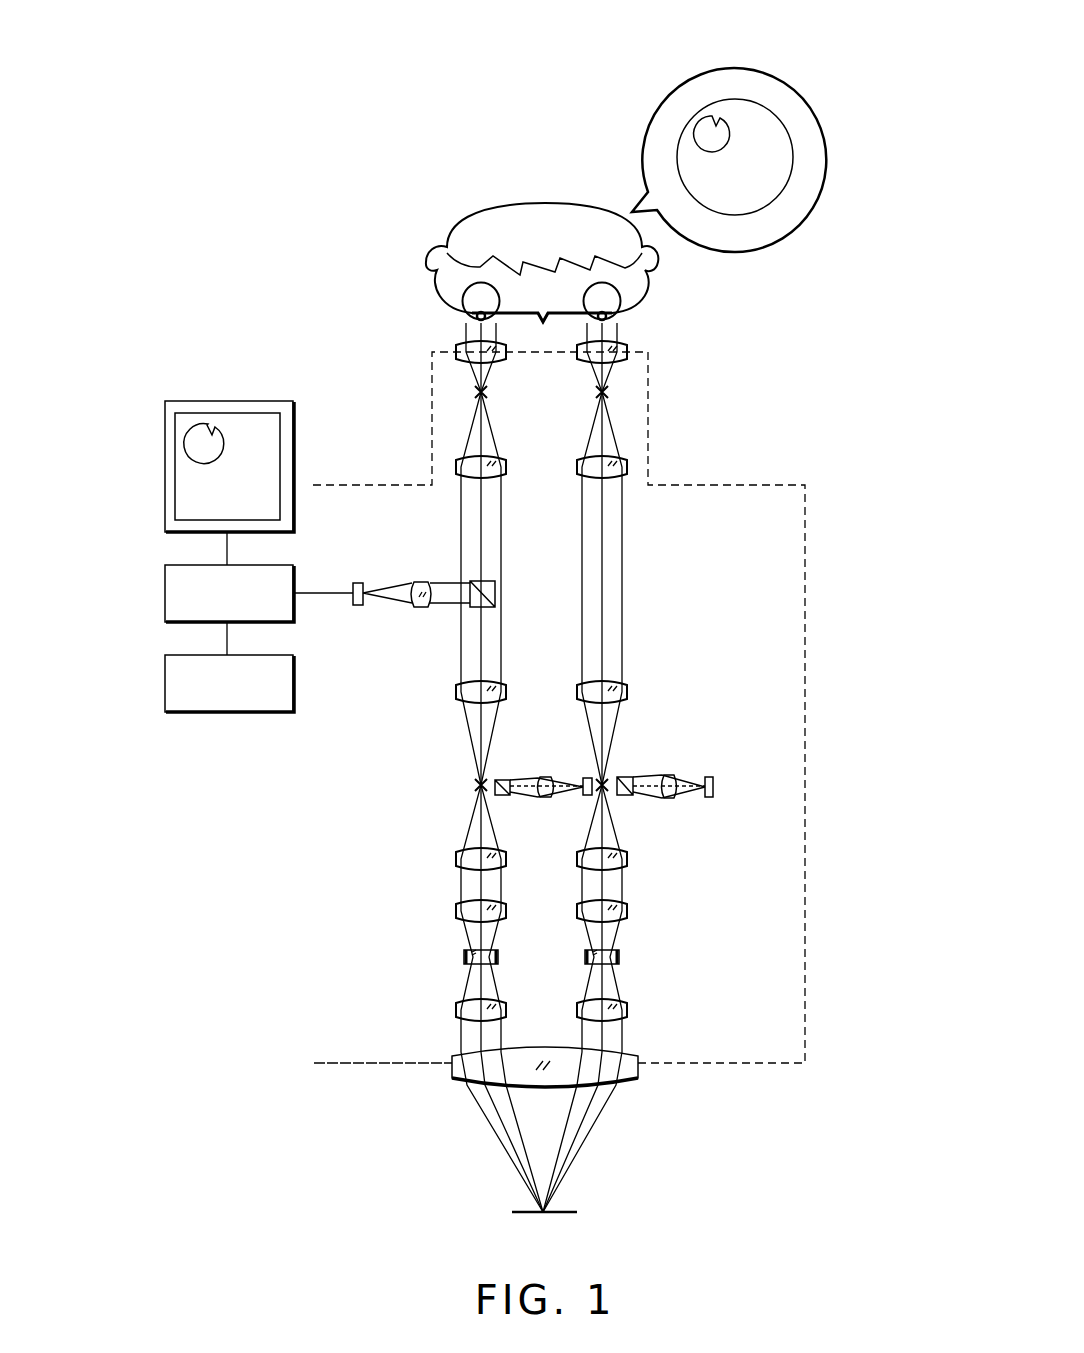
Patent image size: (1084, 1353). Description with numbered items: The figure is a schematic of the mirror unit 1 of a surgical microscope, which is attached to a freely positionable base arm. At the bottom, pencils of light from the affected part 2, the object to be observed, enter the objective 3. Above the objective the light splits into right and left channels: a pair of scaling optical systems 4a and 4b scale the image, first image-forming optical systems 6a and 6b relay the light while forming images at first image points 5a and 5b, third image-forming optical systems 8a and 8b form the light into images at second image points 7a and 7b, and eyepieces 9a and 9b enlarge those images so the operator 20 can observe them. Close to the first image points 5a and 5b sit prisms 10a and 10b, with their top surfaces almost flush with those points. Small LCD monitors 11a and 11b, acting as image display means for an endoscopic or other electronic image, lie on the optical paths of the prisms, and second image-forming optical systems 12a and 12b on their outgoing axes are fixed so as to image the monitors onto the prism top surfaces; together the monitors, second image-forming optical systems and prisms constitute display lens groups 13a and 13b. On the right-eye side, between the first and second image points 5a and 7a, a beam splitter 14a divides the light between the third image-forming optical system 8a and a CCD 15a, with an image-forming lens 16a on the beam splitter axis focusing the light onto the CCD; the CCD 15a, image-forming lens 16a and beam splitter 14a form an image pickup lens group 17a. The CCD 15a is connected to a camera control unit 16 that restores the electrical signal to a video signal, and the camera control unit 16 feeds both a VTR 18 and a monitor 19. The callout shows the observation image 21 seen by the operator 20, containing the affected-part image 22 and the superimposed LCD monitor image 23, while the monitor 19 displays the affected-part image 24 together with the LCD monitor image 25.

The mirror unit 1 is at (806, 557).
The affected part 2 is at (572, 1206).
The objective 3 is at (640, 1080).
The scaling optical system 4a is at (452, 897).
The scaling optical system 4b is at (631, 897).
The first image point 5a is at (486, 791).
The first image point 5b is at (597, 792).
The first image-forming optical system 6a is at (452, 676).
The first image-forming optical system 6b is at (631, 676).
The second image point 7a is at (470, 392).
The second image point 7b is at (614, 392).
The third image-forming optical system 8a is at (455, 466).
The third image-forming optical system 8b is at (632, 464).
The eyepiece 9a is at (455, 350).
The eyepiece 9b is at (628, 350).
The prism 10a is at (505, 780).
The prism 10b is at (625, 778).
The LCD monitor 11a is at (568, 766).
The LCD monitor 11b is at (751, 758).
The second image-forming optical system 12a is at (545, 776).
The second image-forming optical system 12b is at (670, 775).
The display lens group 13a is at (542, 739).
The display lens group 13b is at (707, 738).
The beam splitter 14a is at (454, 616).
The CCD 15a is at (357, 607).
The image-forming lens 16a is at (415, 608).
The image pickup lens group 17a is at (394, 640).
The camera control unit 16 is at (170, 600).
The VTR 18 is at (170, 688).
The monitor 19 is at (199, 440).
The operator 20 is at (543, 212).
The observation image 21 is at (735, 133).
The affected-part image 22 is at (775, 183).
The LCD monitor image 23 is at (705, 128).
The affected-part image 24 is at (248, 420).
The LCD monitor image 25 is at (191, 420).